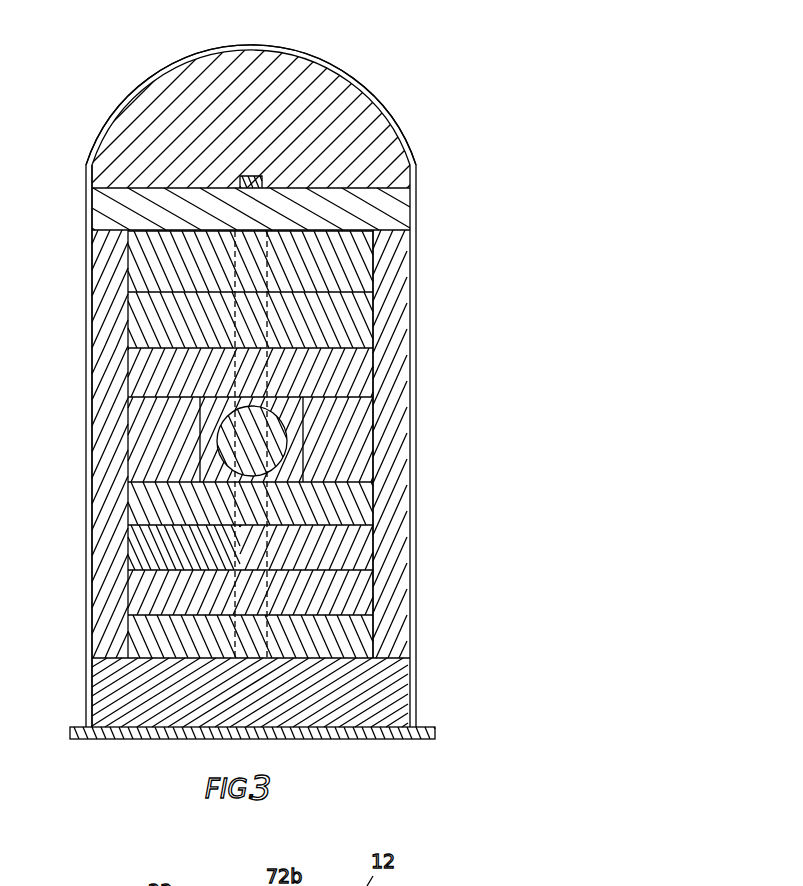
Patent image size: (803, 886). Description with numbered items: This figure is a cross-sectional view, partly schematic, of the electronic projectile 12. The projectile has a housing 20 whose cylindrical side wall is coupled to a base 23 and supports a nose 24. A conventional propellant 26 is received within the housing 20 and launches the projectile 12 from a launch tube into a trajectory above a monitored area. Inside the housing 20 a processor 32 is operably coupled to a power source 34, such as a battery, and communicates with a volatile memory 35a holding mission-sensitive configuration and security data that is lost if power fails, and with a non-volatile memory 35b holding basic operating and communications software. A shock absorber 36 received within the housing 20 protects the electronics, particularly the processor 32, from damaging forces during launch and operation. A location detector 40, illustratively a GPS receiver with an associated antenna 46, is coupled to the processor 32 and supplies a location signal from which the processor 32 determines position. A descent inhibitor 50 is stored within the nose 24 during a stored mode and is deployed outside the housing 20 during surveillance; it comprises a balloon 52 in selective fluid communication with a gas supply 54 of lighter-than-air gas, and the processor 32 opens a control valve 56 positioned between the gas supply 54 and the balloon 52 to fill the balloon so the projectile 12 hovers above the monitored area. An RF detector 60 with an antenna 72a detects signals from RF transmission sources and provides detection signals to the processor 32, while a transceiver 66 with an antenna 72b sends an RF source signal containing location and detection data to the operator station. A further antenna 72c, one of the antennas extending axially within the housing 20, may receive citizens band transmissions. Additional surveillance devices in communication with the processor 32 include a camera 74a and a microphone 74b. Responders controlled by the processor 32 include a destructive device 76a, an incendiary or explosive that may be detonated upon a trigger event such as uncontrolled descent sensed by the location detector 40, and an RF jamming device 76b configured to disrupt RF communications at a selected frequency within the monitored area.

The electronic projectile 12 is at (420, 95).
The housing 20 is at (90, 362).
The base 23 is at (88, 718).
The nose 24 is at (178, 60).
The propellant 26 is at (405, 700).
The processor 32 is at (365, 495).
The power source 34 is at (362, 598).
The volatile memory 35a is at (138, 573).
The non-volatile memory 35b is at (360, 548).
The shock absorber 36 is at (125, 650).
The location detector 40 is at (380, 385).
The antenna 46 is at (378, 360).
The descent inhibitor 50 is at (408, 165).
The balloon 52 is at (103, 168).
The gas supply 54 is at (92, 229).
The control valve 56 is at (252, 176).
The RF detector 60 is at (90, 478).
The transceiver 66 is at (222, 282).
The antenna 72a is at (110, 520).
The antenna 72b is at (332, 258).
The antenna 72c is at (400, 464).
The camera 74a is at (210, 415).
The microphone 74b is at (355, 445).
The destructive device 76a is at (102, 266).
The RF jamming device 76b is at (345, 320).